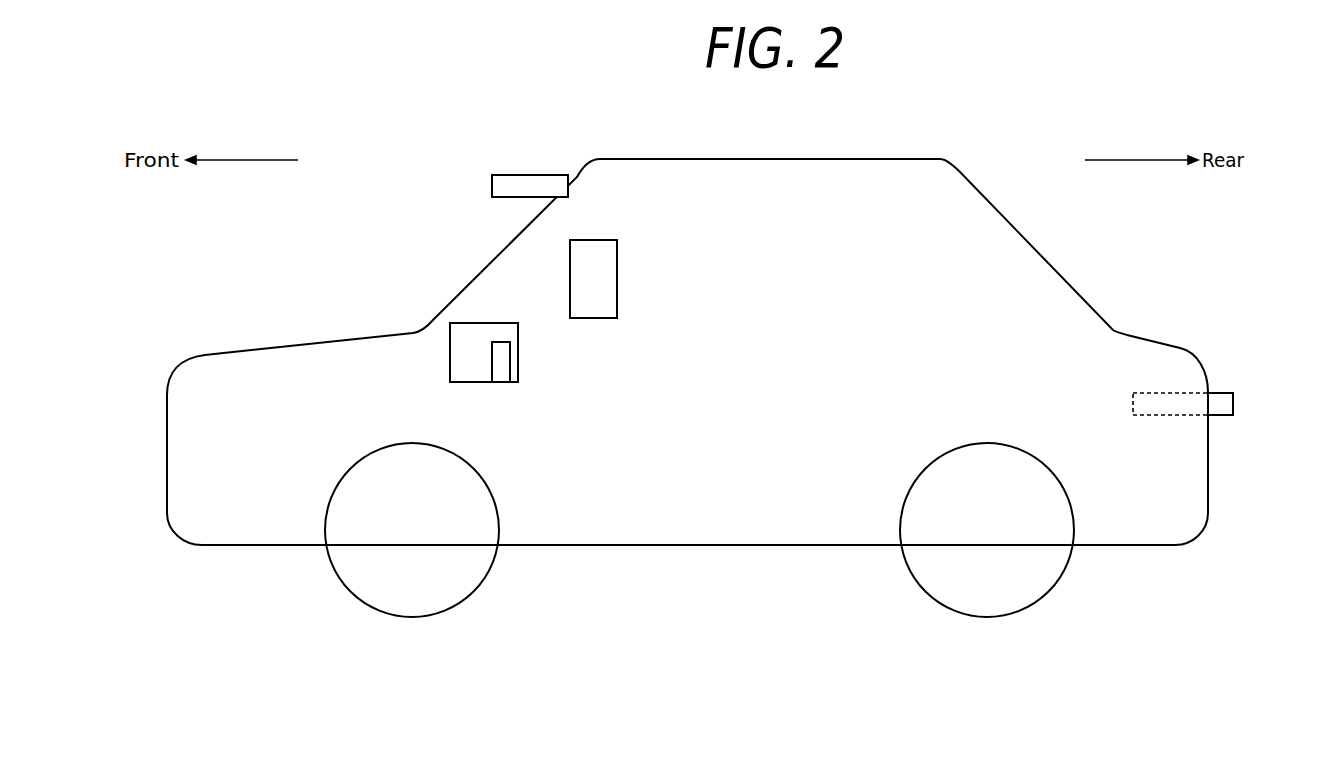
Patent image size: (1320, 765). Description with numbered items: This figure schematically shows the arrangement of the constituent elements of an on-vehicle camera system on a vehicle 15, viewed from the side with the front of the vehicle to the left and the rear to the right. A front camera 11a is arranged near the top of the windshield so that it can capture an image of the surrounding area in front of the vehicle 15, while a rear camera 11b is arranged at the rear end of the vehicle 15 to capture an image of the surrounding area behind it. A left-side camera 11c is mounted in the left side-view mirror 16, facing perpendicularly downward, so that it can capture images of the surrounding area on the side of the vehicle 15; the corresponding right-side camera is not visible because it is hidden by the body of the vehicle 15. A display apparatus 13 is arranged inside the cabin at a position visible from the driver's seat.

The vehicle 15 is at (305, 346).
The front camera 11a is at (537, 175).
The rear camera 11b is at (1220, 393).
The left-side camera 11c is at (503, 358).
The display apparatus 13 is at (618, 278).
The side-view mirror 16 is at (450, 357).